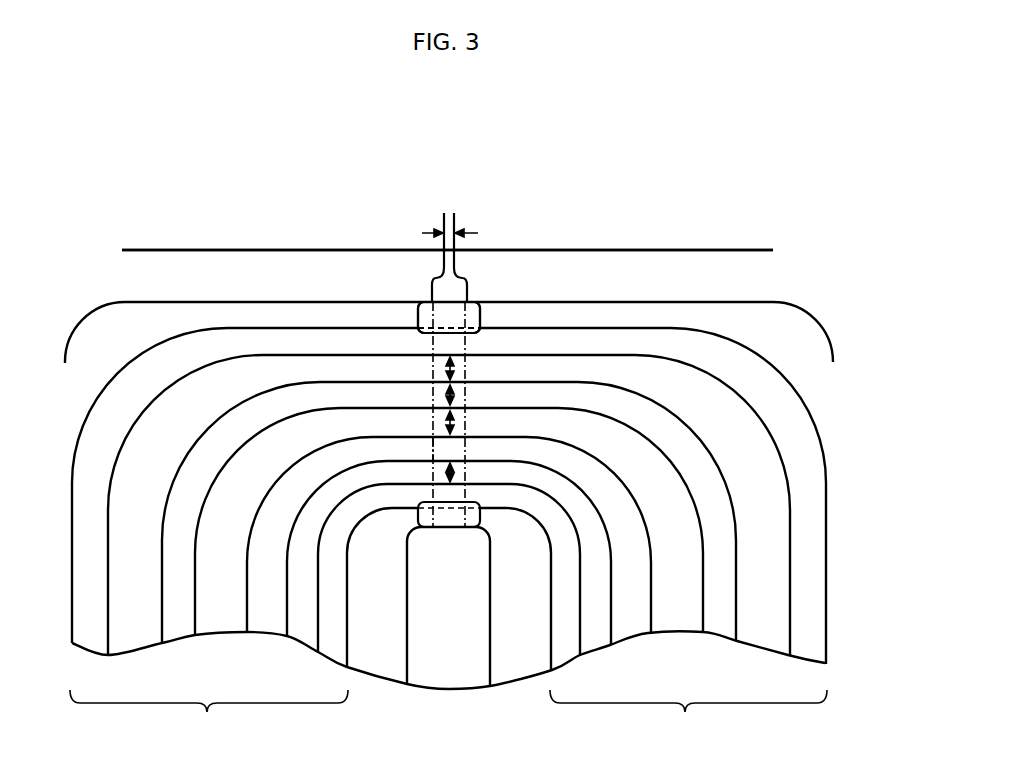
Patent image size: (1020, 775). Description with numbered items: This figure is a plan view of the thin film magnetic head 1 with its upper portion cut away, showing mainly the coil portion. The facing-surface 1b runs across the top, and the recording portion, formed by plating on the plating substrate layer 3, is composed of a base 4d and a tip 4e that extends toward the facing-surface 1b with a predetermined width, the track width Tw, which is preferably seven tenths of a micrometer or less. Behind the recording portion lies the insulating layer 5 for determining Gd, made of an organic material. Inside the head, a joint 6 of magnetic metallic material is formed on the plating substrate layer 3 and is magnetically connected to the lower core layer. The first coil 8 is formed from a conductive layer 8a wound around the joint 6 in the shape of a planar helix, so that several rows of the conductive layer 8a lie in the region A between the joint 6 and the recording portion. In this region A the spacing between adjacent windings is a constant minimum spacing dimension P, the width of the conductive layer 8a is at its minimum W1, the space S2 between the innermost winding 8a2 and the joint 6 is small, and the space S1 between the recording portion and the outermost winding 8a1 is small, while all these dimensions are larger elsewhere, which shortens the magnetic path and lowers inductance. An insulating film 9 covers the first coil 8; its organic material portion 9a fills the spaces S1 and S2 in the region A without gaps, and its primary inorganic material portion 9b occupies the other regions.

The thin-film magnetic head 1 is at (190, 237).
The facing-surface 1b is at (258, 249).
The plating substrate layer 3 is at (406, 244).
The base 4d is at (430, 293).
The tip 4e is at (443, 288).
The insulating layer for determining Gd 5 is at (467, 279).
The track width Tw is at (450, 211).
The space between recording portion and outermost winding S1 is at (480, 315).
The insulating film 9 is at (449, 408).
The organic material portion 9a is at (476, 524).
The inorganic material portion 9b is at (540, 572).
The conductive layer of the outermost winding 8a1 is at (737, 375).
The conductive layer 8a is at (565, 600).
The first coil 8 is at (448, 722).
The conductive layer of the innermost winding 8a2 is at (355, 515).
The space between innermost winding and joint S2 is at (452, 517).
The joint 6 is at (472, 655).
The spacing dimension P is at (433, 420).
The width dimension W1 is at (445, 398).
The region A is at (453, 449).